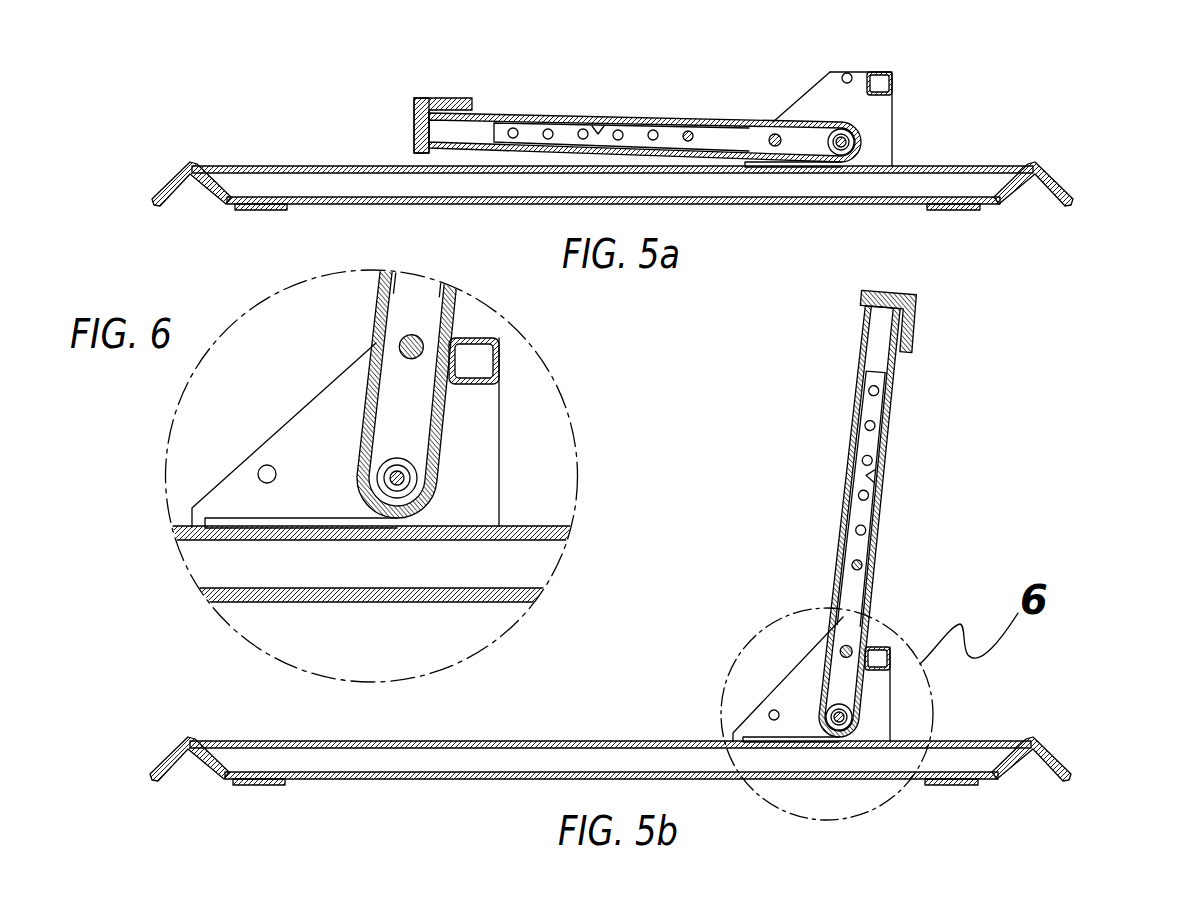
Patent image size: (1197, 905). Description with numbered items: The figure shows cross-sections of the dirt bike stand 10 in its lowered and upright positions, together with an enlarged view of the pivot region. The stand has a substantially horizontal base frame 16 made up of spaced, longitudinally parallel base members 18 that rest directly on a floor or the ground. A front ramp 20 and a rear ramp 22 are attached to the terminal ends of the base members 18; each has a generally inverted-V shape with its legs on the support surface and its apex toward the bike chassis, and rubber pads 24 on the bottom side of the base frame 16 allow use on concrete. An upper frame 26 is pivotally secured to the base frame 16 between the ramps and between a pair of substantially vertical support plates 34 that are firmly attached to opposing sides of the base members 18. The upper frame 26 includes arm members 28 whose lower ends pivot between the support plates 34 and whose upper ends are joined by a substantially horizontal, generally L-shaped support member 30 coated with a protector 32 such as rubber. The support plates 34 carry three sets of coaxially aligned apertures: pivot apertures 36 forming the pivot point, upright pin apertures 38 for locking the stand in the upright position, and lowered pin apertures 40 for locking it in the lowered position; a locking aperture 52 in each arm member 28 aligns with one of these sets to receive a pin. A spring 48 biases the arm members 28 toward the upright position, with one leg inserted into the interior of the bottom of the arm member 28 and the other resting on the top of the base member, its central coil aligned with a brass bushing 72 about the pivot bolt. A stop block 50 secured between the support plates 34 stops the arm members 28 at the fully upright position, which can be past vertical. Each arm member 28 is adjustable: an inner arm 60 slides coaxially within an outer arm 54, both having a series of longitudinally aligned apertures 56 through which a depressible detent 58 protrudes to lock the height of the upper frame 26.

In FIG. 5A, the dirt bike stand 10 is at (1008, 80).
In FIG. 5B, the dirt bike stand 10 is at (1042, 396).
In FIG. 5A, the base frame 16 is at (1041, 248).
In FIG. 5B, the base frame 16 is at (243, 715).
In FIG. 6, the base members 18 is at (295, 592).
In FIG. 5A, the front ramp 20 is at (1057, 183).
In FIG. 5B, the front ramp 20 is at (1057, 758).
In FIG. 5A, the rear ramp 22 is at (170, 183).
In FIG. 5B, the rear ramp 22 is at (170, 758).
In FIG. 5A, the rubber pads 24 is at (253, 207).
In FIG. 5B, the rubber pads 24 is at (253, 785).
In FIG. 5A, the upper frame 26 is at (673, 75).
In FIG. 5B, the upper frame 26 is at (802, 408).
In FIG. 6, the arm members 28 is at (382, 303).
In FIG. 5A, the support member 30 is at (447, 97).
In FIG. 5B, the support member 30 is at (887, 291).
In FIG. 5A, the protector 32 is at (425, 96).
In FIG. 5A, the support plates 34 is at (882, 120).
In FIG. 5B, the support plates 34 is at (880, 702).
In FIG. 6, the support plates 34 is at (473, 438).
In FIG. 5A, the pivot apertures 36 is at (801, 97).
In FIG. 5B, the pivot apertures 36 is at (825, 715).
In FIG. 6, the pivot apertures 36 is at (378, 482).
In FIG. 5A, the upright pin apertures 38 is at (848, 72).
In FIG. 5B, the lowered pin apertures 40 is at (773, 710).
In FIG. 6, the lowered pin apertures 40 is at (272, 470).
In FIG. 5A, the spring 48 is at (808, 167).
In FIG. 5B, the spring 48 is at (810, 741).
In FIG. 6, the spring 48 is at (340, 518).
In FIG. 5A, the stop block 50 is at (878, 70).
In FIG. 5B, the stop block 50 is at (881, 647).
In FIG. 6, the stop block 50 is at (474, 361).
In FIG. 5A, the locking aperture 52 is at (773, 134).
In FIG. 5B, the locking aperture 52 is at (845, 650).
In FIG. 6, the locking aperture 52 is at (406, 352).
In FIG. 5A, the outer arm 54 is at (560, 115).
In FIG. 5B, the outer arm 54 is at (847, 472).
In FIG. 5A, the apertures 56 is at (583, 134).
In FIG. 5B, the apertures 56 is at (875, 425).
In FIG. 5A, the depressible detent 58 is at (688, 136).
In FIG. 5B, the depressible detent 58 is at (877, 562).
In FIG. 5A, the inner arm 60 is at (598, 126).
In FIG. 5B, the inner arm 60 is at (868, 480).
In FIG. 5A, the brass bushing 72 is at (841, 142).
In FIG. 5B, the brass bushing 72 is at (839, 717).
In FIG. 6, the brass bushing 72 is at (413, 487).